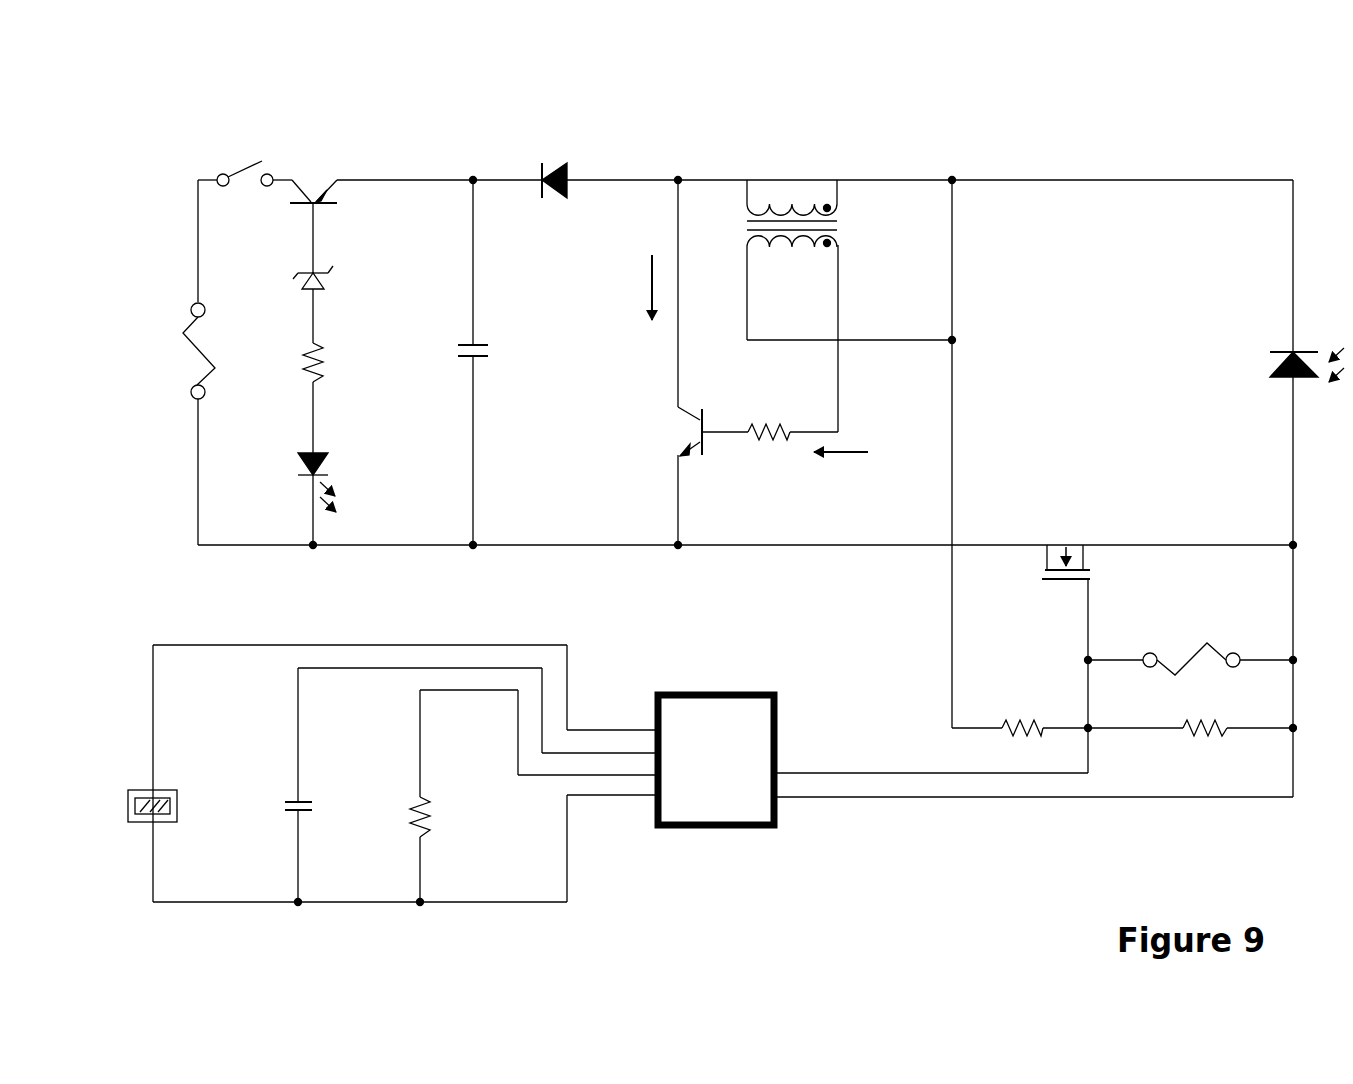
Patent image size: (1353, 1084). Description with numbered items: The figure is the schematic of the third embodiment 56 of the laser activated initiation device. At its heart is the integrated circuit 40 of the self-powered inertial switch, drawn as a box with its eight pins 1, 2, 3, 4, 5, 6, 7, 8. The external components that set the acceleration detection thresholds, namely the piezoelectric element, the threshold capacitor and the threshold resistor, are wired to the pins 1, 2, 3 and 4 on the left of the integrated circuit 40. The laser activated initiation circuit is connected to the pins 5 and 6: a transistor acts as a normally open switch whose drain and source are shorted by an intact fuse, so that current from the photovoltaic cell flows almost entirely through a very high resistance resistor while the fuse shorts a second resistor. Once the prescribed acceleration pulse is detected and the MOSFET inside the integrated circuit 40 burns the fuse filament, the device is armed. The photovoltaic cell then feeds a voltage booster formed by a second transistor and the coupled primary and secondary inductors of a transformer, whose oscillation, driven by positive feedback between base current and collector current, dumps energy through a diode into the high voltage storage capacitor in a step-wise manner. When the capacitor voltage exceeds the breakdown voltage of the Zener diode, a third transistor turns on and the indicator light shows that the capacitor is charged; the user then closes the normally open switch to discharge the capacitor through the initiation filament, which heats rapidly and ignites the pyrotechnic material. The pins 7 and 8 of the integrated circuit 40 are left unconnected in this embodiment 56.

The third embodiment of the laser activated initiation device 56 is at (1149, 121).
The integrated circuit 40 is at (706, 682).
The pin 1 is at (624, 726).
The pin 2 is at (611, 751).
The pin 3 is at (599, 771).
The pin 4 is at (624, 794).
The pin 5 is at (1019, 794).
The pin 6 is at (917, 771).
The pin 7 is at (768, 751).
The pin 8 is at (768, 726).